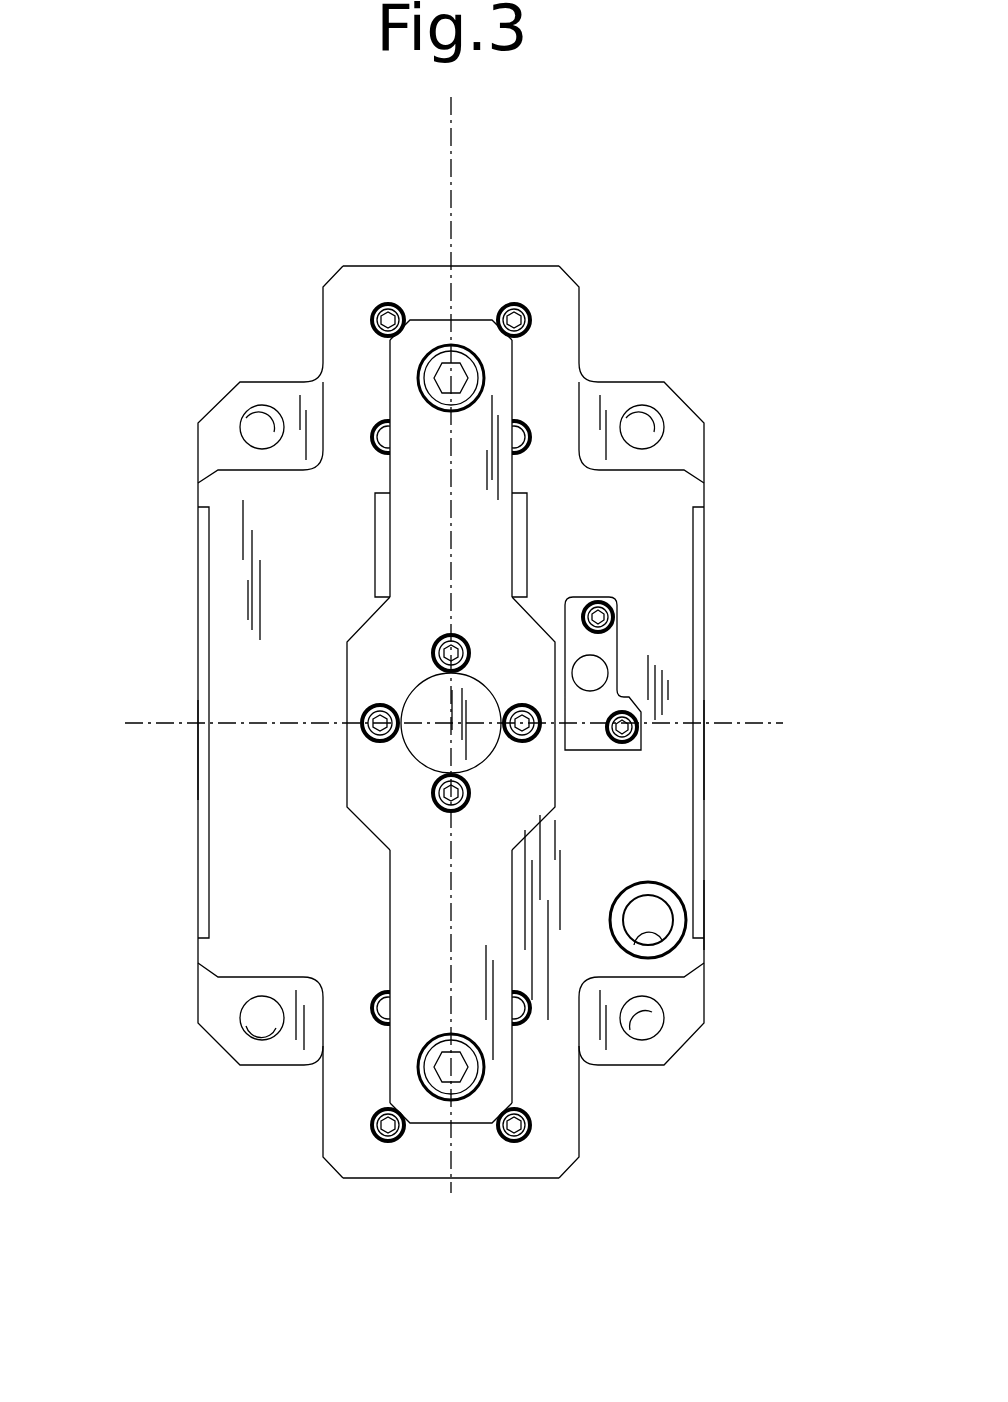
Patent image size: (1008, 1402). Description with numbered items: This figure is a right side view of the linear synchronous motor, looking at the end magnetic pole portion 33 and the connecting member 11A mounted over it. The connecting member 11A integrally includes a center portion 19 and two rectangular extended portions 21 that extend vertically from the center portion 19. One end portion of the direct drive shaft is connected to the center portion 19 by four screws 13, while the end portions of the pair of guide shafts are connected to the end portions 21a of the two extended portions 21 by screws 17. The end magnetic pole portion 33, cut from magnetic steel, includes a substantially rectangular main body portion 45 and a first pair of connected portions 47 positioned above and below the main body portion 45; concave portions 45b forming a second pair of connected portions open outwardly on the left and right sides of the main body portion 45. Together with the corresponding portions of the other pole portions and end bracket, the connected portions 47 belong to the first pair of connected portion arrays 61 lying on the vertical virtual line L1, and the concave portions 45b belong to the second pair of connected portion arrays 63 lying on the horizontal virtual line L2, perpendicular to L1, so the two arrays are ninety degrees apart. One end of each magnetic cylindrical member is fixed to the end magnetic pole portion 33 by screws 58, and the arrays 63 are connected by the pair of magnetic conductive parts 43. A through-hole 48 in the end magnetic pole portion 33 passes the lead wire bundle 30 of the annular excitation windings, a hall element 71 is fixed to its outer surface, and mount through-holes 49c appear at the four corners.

The connecting member 11A is at (358, 615).
The screws 13 is at (462, 640).
The screws 17 is at (437, 350).
The center portion 19 is at (365, 780).
The extended portions 21 is at (415, 527).
The end portions 21a is at (500, 376).
The lead wire bundle 30 is at (700, 912).
The end magnetic pole portion 33 is at (190, 486).
The magnetic conductive parts 43 is at (197, 868).
The main body portion 45 is at (240, 690).
The concave portions 45b is at (205, 637).
The first pair of connected portions 47 is at (340, 300).
The through-hole 48 is at (667, 938).
The mount through-holes 49c is at (246, 418).
The screws 58 is at (384, 306).
The first pair of connected portion arrays 61 is at (482, 252).
The second pair of connected portion arrays 63 is at (190, 748).
The hall element 71 is at (600, 650).
The virtual line L1 is at (453, 118).
The virtual line L2 is at (757, 722).